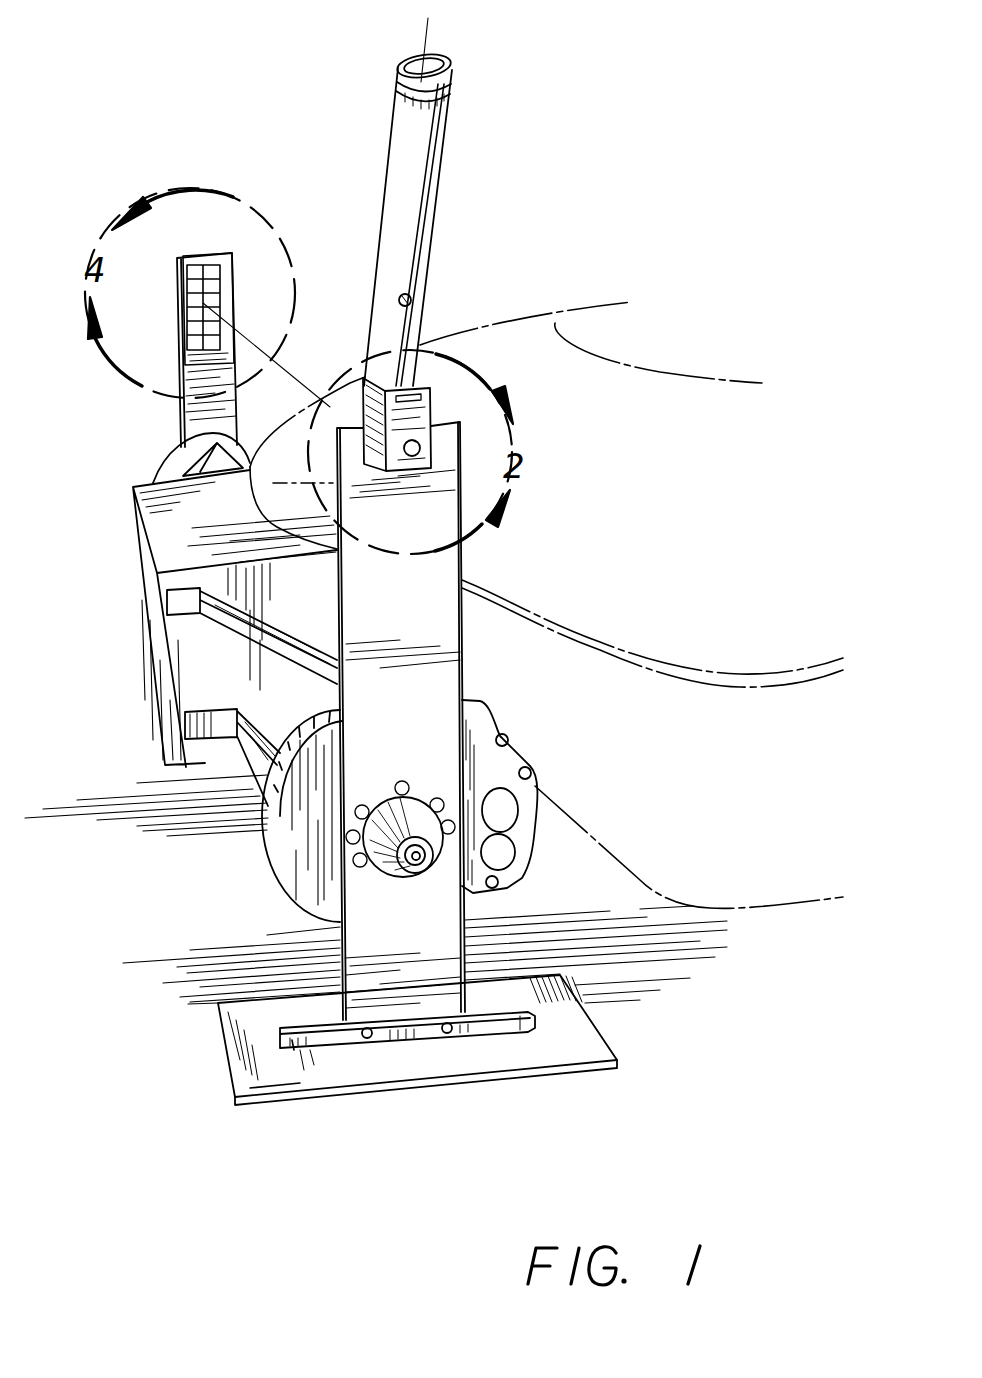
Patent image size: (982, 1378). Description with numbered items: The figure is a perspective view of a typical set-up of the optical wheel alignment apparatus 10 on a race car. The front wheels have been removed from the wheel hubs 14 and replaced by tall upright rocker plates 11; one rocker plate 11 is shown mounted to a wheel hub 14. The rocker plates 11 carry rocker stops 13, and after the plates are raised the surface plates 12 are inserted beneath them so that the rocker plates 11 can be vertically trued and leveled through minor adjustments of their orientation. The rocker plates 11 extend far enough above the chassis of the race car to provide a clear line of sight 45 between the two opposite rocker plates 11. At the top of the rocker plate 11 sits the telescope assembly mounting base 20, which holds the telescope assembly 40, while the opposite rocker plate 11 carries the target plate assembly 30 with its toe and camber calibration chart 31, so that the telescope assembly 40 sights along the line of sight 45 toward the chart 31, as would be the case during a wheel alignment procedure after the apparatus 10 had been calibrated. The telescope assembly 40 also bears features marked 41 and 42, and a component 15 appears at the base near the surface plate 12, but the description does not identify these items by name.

The optical wheel alignment apparatus 10 is at (545, 480).
The rocker plate 11 is at (185, 415).
The surface plate 12 is at (503, 1052).
The rocker stop 13 is at (296, 1050).
The wheel hub 14 is at (185, 463).
The mounting bar 15 is at (450, 1037).
The telescope assembly mounting base 20 is at (418, 404).
The target plate assembly 30 is at (170, 322).
The toe and camber calibration chart 31 is at (203, 303).
The telescope assembly 40 is at (400, 120).
The slot 41 is at (435, 152).
The tube axis 42 is at (433, 56).
The line of sight 45 is at (291, 374).